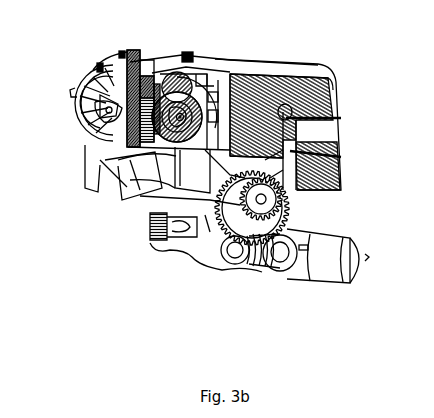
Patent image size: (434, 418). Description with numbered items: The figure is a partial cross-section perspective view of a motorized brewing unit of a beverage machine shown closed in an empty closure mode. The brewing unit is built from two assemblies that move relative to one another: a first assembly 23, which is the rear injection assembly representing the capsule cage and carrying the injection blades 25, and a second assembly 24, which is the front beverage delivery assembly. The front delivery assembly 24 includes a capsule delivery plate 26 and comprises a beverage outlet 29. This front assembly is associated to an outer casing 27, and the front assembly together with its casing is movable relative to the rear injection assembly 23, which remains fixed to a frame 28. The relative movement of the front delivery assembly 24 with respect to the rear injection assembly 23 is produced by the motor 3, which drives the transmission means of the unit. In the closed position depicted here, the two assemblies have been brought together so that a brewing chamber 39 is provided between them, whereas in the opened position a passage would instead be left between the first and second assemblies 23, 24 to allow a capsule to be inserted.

The motor 3 is at (328, 274).
The first assembly 23 is at (183, 76).
The second assembly 24 is at (79, 77).
The injection blades 25 is at (178, 116).
The capsule delivery plate 26 is at (119, 108).
The outer casing 27 is at (270, 63).
The frame 28 is at (190, 173).
The beverage outlet 29 is at (106, 120).
The brewing chamber 39 is at (168, 70).